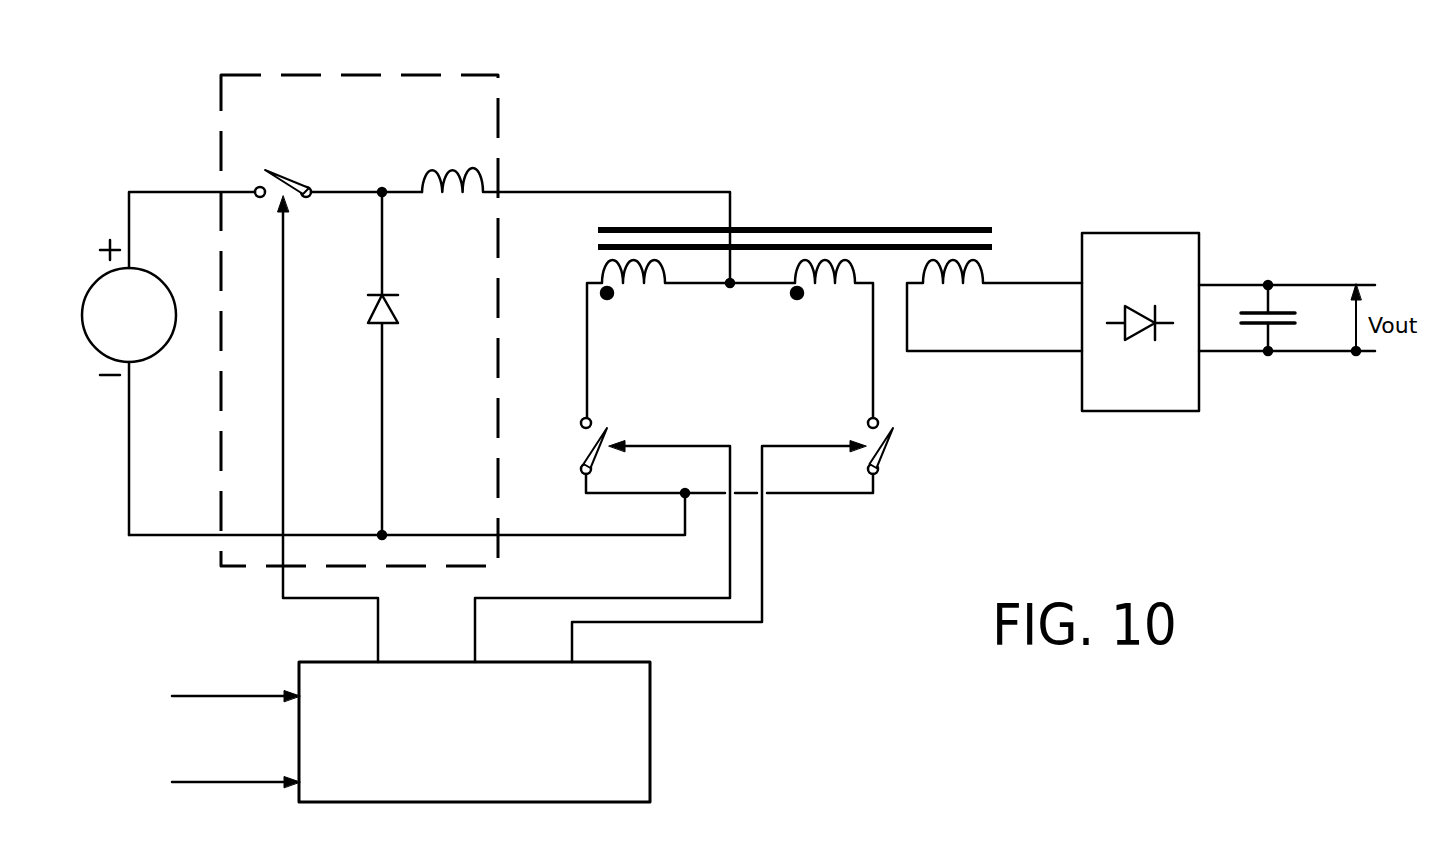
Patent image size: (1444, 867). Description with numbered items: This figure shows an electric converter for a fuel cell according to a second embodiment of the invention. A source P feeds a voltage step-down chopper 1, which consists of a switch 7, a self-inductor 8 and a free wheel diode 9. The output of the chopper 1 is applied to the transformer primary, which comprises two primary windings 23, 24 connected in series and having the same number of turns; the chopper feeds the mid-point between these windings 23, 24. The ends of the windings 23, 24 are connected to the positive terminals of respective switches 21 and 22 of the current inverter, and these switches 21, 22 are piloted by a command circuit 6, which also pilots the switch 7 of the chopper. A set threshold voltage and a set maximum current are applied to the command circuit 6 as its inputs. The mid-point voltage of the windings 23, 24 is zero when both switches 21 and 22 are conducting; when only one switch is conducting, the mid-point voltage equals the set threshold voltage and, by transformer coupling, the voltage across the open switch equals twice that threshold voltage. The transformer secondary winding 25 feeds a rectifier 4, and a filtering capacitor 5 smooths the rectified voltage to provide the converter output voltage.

The voltage step-down chopper 1 is at (356, 88).
The rectifier 4 is at (1127, 245).
The filtering capacitor 5 is at (1280, 305).
The command circuit 6 is at (635, 733).
The switch 7 is at (297, 172).
The self-inductor 8 is at (448, 168).
The free wheel diode 9 is at (392, 312).
The switch 21 is at (585, 447).
The switch 22 is at (892, 458).
The primary winding 23 is at (632, 285).
The primary winding 24 is at (828, 278).
The secondary winding 25 is at (952, 281).
The power source P is at (144, 348).